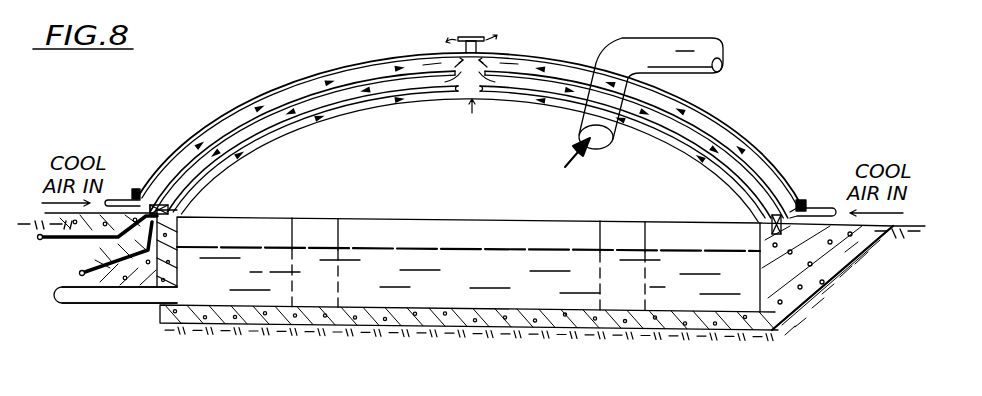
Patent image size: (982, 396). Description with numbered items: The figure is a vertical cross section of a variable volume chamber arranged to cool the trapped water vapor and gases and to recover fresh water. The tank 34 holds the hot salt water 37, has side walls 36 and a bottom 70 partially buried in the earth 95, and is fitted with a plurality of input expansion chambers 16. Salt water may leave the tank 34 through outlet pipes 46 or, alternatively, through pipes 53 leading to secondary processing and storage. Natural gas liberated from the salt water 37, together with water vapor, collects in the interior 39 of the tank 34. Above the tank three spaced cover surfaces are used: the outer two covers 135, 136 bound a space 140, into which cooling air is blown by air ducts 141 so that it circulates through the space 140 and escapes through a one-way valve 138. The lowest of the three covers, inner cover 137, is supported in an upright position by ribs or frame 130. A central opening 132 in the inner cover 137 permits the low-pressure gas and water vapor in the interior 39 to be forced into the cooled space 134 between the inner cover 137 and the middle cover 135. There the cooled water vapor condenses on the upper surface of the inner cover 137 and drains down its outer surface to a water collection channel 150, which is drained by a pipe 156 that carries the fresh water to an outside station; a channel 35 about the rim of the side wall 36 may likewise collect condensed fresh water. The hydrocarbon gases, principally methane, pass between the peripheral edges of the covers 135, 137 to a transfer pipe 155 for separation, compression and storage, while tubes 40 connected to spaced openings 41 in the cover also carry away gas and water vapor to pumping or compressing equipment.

The input expansion chambers 16 is at (340, 243).
The tank 34 is at (469, 118).
The channel 35 is at (826, 274).
The side walls 36 is at (491, 240).
The hot salt water 37 is at (481, 297).
The interior of tank 39 is at (471, 177).
The tubes 40 is at (723, 44).
The spaced openings 41 is at (569, 165).
The outlet pipes 46 is at (106, 335).
The pipes 53 is at (90, 305).
The bottom 70 is at (606, 332).
The earth 95 is at (496, 380).
The ribs or frame 130 is at (676, 149).
The central opening 132 is at (467, 99).
The cooled space 134 is at (347, 104).
The cover surface 135 is at (705, 148).
The outer cover surface 136 is at (745, 147).
The inner cover 137 is at (657, 132).
The one-way valve 138 is at (466, 37).
The space 140 is at (406, 58).
The air ducts 141 is at (115, 197).
The water collection channel 150 is at (165, 246).
The transfer pipe 155 is at (44, 242).
The pipe 156 is at (80, 274).